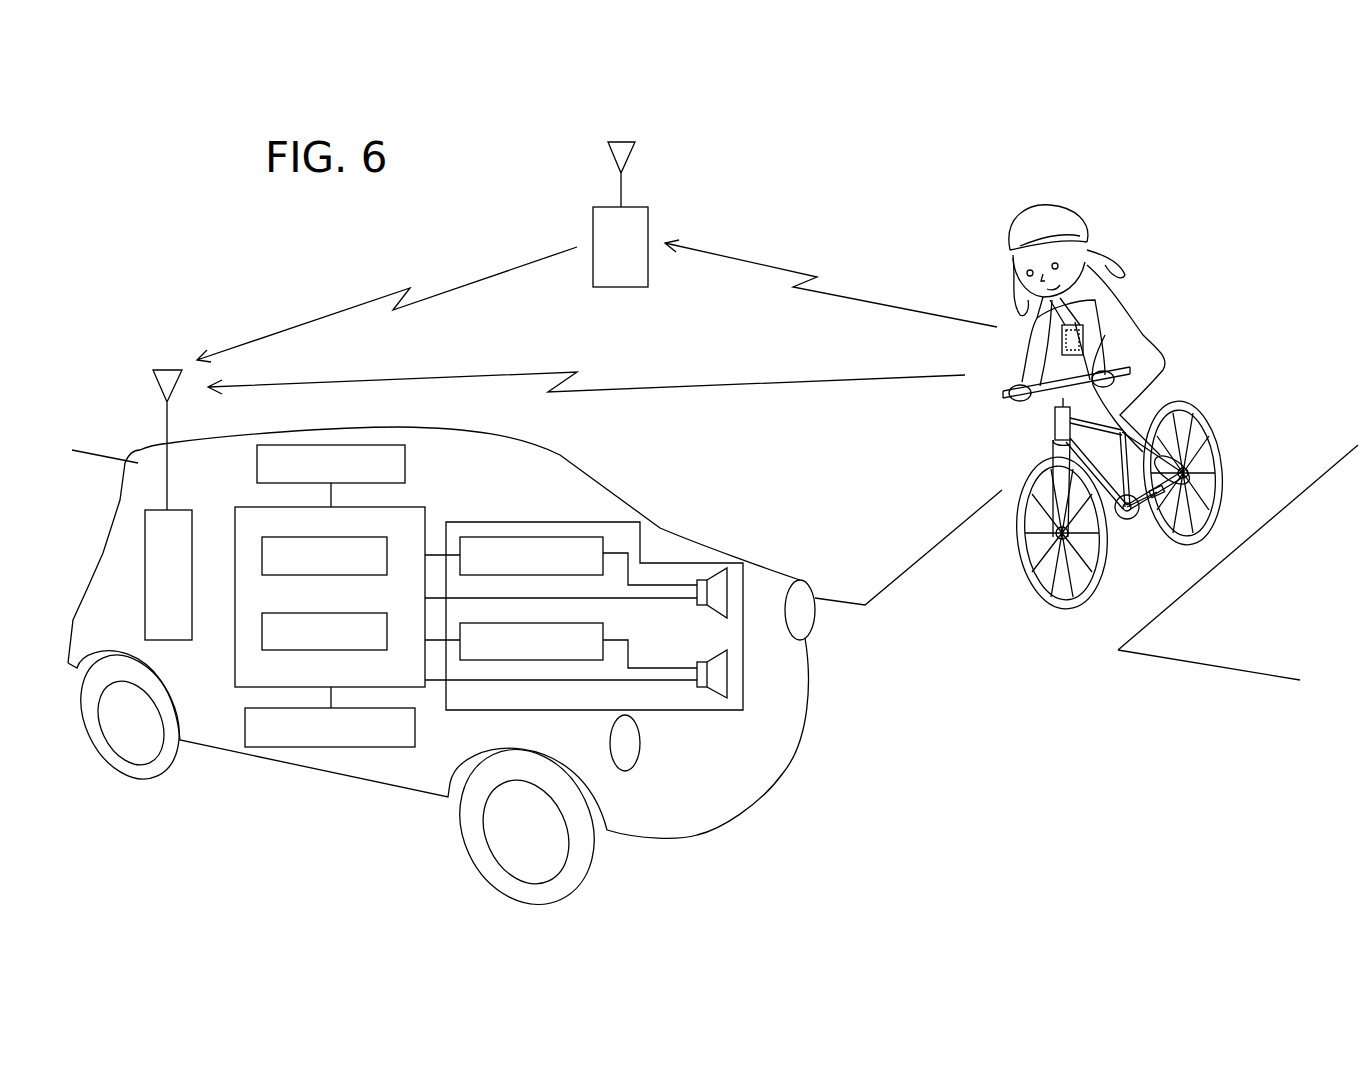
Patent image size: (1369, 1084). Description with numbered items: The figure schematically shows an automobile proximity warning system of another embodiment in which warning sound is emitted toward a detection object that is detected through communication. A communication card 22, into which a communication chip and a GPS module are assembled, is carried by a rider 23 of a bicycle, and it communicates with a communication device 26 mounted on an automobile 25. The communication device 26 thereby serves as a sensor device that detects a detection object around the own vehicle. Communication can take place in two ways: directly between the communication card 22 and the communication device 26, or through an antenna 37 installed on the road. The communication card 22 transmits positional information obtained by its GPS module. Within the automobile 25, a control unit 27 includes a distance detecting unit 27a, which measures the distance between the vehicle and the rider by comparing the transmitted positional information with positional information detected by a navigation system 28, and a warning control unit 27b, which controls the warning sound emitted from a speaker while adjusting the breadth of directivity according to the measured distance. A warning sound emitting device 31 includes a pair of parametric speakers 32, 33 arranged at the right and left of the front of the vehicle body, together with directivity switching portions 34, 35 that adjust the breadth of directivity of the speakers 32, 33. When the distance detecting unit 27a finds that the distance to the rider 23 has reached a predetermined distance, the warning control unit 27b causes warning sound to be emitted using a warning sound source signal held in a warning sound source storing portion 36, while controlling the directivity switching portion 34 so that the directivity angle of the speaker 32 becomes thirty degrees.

The communication card 22 is at (1043, 353).
The rider 23 is at (1125, 316).
The automobile 25 is at (586, 472).
The communication device 26 is at (185, 508).
The control unit 27 is at (412, 507).
The distance detecting unit 27a is at (366, 537).
The warning control unit 27b is at (366, 613).
The navigation system 28 is at (405, 465).
The warning sound emitting device 31 is at (497, 522).
The parametric speaker 32 is at (713, 575).
The parametric speaker 33 is at (730, 673).
The directivity switching portion 34 is at (540, 537).
The directivity switching portion 35 is at (598, 622).
The warning sound source storing portion 36 is at (245, 724).
The antenna 37 is at (593, 232).